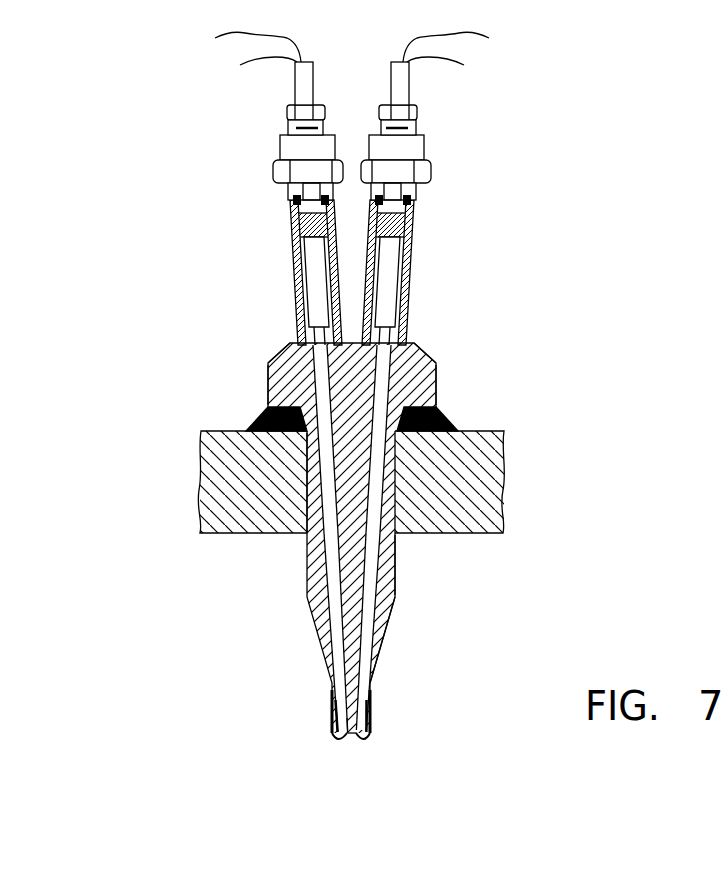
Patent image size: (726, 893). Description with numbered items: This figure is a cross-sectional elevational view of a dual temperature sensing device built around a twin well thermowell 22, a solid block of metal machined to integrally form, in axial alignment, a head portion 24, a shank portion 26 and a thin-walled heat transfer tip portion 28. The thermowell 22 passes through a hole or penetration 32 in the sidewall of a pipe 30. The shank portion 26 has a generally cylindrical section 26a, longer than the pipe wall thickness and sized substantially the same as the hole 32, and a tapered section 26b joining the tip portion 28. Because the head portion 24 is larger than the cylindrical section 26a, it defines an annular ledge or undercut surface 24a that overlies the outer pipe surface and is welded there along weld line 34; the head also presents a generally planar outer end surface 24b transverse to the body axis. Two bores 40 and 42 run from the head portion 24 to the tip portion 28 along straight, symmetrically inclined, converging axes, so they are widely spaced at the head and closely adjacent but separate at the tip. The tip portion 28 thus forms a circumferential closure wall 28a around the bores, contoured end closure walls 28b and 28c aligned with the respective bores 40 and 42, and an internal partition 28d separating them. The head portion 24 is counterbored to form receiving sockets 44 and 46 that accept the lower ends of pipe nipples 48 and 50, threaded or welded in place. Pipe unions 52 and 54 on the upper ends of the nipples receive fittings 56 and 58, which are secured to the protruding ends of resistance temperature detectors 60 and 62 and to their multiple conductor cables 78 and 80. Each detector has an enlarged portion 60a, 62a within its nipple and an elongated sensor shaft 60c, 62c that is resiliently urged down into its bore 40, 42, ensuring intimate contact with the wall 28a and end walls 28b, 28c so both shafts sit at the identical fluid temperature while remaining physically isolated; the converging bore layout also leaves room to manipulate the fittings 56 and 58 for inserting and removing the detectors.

The twin well thermowell 22 is at (503, 356).
The head portion 24 is at (440, 395).
The annular ledge or undercut surface 24a is at (275, 393).
The outer end surface 24b is at (428, 330).
The shank portion 26 is at (400, 572).
The generally cylindrical section 26a is at (398, 548).
The tapered section 26b is at (388, 612).
The heat transfer tip portion 28 is at (372, 715).
The circumferential closure wall 28a is at (333, 710).
The end closure wall 28b is at (338, 738).
The end closure wall 28c is at (363, 738).
The internal partition 28d is at (352, 662).
The pipe 30 is at (200, 488).
The hole or penetration 32 is at (305, 552).
The weld line 34 is at (452, 426).
The bore 40 is at (332, 398).
The bore 42 is at (362, 448).
The receiving socket 44 is at (291, 350).
The receiving socket 46 is at (430, 350).
The pipe nipple 48 is at (290, 253).
The pipe nipple 50 is at (418, 242).
The pipe union 52 is at (277, 170).
The pipe union 54 is at (428, 150).
The fitting 56 is at (290, 108).
The fitting 58 is at (417, 113).
The resistance temperature detector 60 is at (298, 88).
The enlarged portion 60a is at (318, 290).
The sensor shaft 60c is at (332, 622).
The resistance temperature detector 62 is at (410, 88).
The enlarged portion 62a is at (390, 285).
The sensor shaft 62c is at (362, 640).
The multiple conductor cable 78 is at (242, 47).
The multiple conductor cable 80 is at (465, 53).